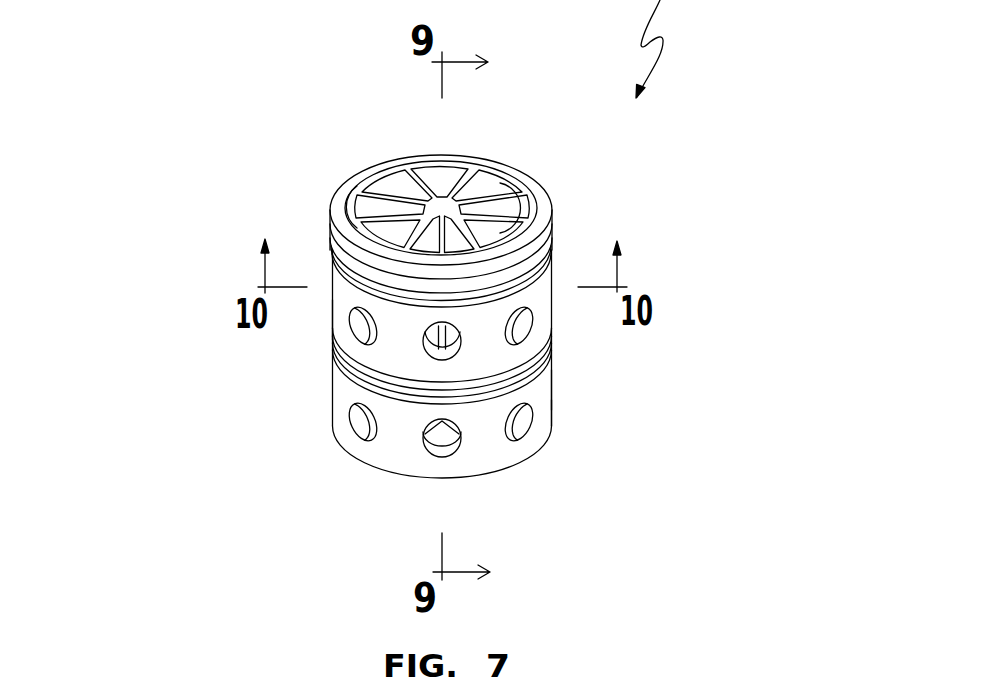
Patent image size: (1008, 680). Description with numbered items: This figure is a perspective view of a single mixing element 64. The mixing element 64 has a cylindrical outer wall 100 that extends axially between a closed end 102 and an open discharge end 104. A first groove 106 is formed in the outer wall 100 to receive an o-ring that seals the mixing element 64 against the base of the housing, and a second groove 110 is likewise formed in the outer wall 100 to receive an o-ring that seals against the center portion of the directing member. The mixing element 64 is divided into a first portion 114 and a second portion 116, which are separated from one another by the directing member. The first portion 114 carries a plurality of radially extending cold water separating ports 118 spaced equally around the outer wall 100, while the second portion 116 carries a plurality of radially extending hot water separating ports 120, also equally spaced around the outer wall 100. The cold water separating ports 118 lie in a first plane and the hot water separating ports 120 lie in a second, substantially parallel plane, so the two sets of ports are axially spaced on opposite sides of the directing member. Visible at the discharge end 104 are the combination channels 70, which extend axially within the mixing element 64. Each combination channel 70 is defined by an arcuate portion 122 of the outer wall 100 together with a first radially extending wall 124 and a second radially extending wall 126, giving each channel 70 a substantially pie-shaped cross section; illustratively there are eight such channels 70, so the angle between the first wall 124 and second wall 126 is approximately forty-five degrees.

The combination channel 70 is at (395, 188).
The cylindrical outer wall 100 is at (551, 424).
The closed end 102 is at (321, 463).
The open discharge end 104 is at (361, 149).
The first groove 106 is at (552, 250).
The second groove 110 is at (334, 362).
The first portion 114 is at (550, 388).
The second portion 116 is at (333, 316).
The cold water separating ports 118 is at (358, 443).
The hot water separating ports 120 is at (374, 341).
The arcuate portion 122 is at (536, 194).
The first radially extending wall 124 is at (503, 181).
The second radially extending wall 126 is at (541, 226).
The mixing element 64 is at (659, 679).